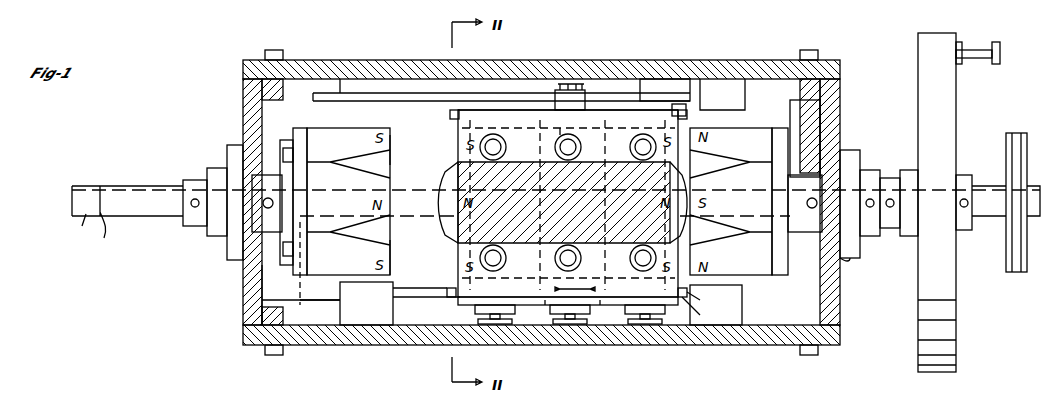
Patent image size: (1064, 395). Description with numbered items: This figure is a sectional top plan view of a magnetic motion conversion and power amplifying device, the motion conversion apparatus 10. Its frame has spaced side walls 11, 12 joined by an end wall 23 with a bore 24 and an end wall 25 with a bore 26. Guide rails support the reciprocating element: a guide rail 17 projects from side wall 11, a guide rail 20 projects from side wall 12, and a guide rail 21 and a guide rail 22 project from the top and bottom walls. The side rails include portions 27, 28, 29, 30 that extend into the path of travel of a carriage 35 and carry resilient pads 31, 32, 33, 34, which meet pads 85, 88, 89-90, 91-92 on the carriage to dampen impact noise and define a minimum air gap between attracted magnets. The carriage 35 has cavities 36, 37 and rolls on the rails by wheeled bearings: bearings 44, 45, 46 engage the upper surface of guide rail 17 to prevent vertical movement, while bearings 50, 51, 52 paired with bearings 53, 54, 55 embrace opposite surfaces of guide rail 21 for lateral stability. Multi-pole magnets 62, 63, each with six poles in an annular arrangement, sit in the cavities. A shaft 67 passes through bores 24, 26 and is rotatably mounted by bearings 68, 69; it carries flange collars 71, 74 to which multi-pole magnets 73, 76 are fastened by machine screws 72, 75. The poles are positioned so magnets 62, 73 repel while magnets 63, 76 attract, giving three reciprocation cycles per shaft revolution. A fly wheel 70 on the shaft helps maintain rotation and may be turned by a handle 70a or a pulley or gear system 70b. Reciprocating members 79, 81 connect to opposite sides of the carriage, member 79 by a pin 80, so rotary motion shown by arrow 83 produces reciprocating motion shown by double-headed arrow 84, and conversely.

The motion conversion apparatus 10 is at (126, 284).
The side wall 11 is at (305, 62).
The side wall 12 is at (325, 335).
The guide rail 17 is at (655, 86).
The guide rail 20 is at (672, 315).
The guide rail 21 is at (438, 176).
The guide rail 22 is at (438, 232).
The end wall 23 is at (250, 300).
The bore 24 is at (268, 245).
The end wall 25 is at (832, 320).
The bore 26 is at (850, 258).
The guide rail portion 27 is at (740, 296).
The guide rail portion 28 is at (392, 276).
The guide rail portion 29 is at (736, 110).
The guide rail portion 30 is at (388, 130).
The resilient pad 31 is at (684, 292).
The resilient pad 32 is at (446, 292).
The resilient pad 33 is at (690, 112).
The resilient pad 34 is at (440, 120).
The carriage 35 is at (562, 115).
The cavity 36 is at (562, 127).
The cavity 37 is at (605, 305).
The wheeled bearing 44 is at (515, 305).
The wheeled bearing 45 is at (572, 315).
The wheeled bearing 46 is at (660, 305).
The wheeled bearing 50 is at (496, 272).
The wheeled bearing 51 is at (508, 264).
The wheeled bearing 52 is at (628, 248).
The wheeled bearing 53 is at (506, 150).
The wheeled bearing 54 is at (582, 148).
The wheeled bearing 55 is at (626, 136).
The multi-pole magnet 62 is at (462, 150).
The multi-pole magnet 63 is at (690, 162).
The shaft 67 is at (121, 185).
The bearing 68 is at (214, 176).
The bearing 69 is at (855, 150).
The fly wheel 70 is at (925, 62).
The handle 70a is at (976, 56).
The pulley or gear system 70b is at (1012, 272).
The flange collar 71 is at (284, 140).
The machine screw 72 is at (286, 150).
The multi-pole magnet 73 is at (332, 130).
The flange collar 74 is at (796, 125).
The machine screw 75 is at (835, 118).
The multi-pole magnet 76 is at (780, 272).
The reciprocating member 79 is at (432, 97).
The pin 80 is at (570, 88).
The reciprocating member 81 is at (326, 310).
The arrow 83 is at (102, 222).
The double-headed arrow 84 is at (548, 297).
The resilient pad 85 is at (460, 285).
The resilient pad 88 is at (458, 128).
The resilient pads 89-90 is at (683, 297).
The resilient pads 91-92 is at (690, 104).